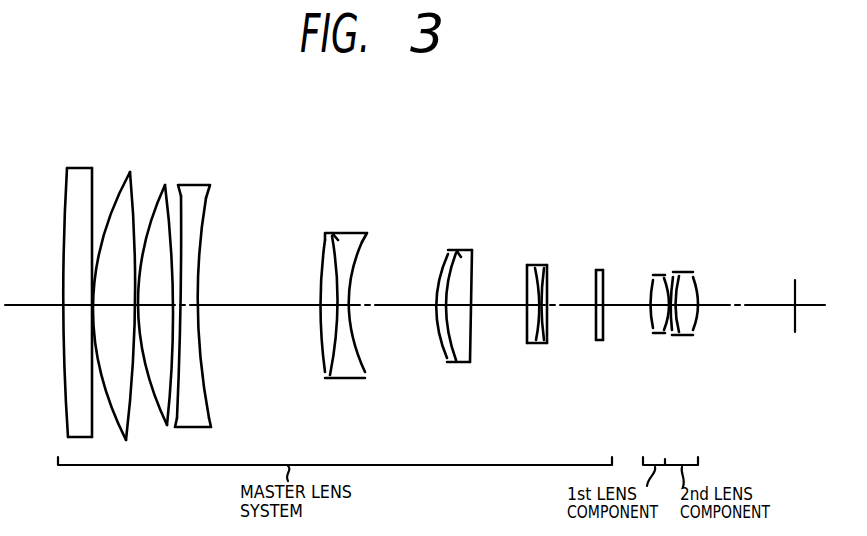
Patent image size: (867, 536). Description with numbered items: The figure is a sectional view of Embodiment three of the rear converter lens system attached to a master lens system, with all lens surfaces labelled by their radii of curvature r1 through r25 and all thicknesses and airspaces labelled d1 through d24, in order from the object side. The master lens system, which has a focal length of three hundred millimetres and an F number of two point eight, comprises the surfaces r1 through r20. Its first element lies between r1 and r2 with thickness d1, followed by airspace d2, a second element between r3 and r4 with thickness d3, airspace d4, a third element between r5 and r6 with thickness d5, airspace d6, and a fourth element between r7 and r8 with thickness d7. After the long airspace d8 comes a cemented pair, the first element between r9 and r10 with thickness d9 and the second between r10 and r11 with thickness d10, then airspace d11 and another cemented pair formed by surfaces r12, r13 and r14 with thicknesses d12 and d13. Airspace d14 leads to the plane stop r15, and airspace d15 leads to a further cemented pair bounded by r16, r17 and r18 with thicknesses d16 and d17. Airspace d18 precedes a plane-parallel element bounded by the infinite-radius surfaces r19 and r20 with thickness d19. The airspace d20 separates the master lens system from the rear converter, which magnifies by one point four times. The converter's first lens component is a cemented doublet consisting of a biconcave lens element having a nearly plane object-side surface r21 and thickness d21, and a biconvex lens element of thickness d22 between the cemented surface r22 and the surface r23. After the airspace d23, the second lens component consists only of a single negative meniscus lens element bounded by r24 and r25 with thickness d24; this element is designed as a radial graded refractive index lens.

The radius of curvature of first lens surface r1 is at (67, 190).
The radius of curvature of second lens surface r2 is at (92, 188).
The radius of curvature of third lens surface r3 is at (117, 190).
The radius of curvature of fourth lens surface r4 is at (131, 174).
The radius of curvature of fifth lens surface r5 is at (161, 188).
The radius of curvature of sixth lens surface r6 is at (167, 184).
The radius of curvature of seventh lens surface r7 is at (182, 197).
The radius of curvature of eighth lens surface r8 is at (204, 187).
The radius of curvature of ninth lens surface r9 is at (323, 240).
The radius of curvature of tenth lens surface r10 is at (338, 233).
The radius of curvature of eleventh lens surface r11 is at (360, 242).
The radius of curvature of twelfth lens surface r12 is at (437, 257).
The radius of curvature of thirteenth lens surface r13 is at (453, 250).
The radius of curvature of fourteenth lens surface r14 is at (471, 250).
The stop r15 is at (527, 265).
The radius of curvature of sixteenth lens surface r16 is at (502, 257).
The radius of curvature of seventeenth lens surface r17 is at (535, 265).
The radius of curvature of eighteenth lens surface r18 is at (555, 262).
The radius of curvature of nineteenth lens surface r19 is at (596, 270).
The radius of curvature of twentieth lens surface r20 is at (603, 272).
The radius of curvature of twenty-first lens surface r21 is at (653, 282).
The radius of curvature of twenty-second lens surface r22 is at (656, 276).
The radius of curvature of twenty-third lens surface r23 is at (671, 272).
The radius of curvature of twenty-fourth lens surface r24 is at (680, 275).
The radius of curvature of twenty-fifth lens surface r25 is at (695, 280).
The thickness of first lens element d1 is at (77, 308).
The airspace between first and second lens elements d2 is at (92, 308).
The thickness of second lens element d3 is at (113, 308).
The airspace between second and third lens elements d4 is at (130, 297).
The thickness of third lens element d5 is at (153, 308).
The airspace between third and fourth lens elements d6 is at (178, 310).
The thickness of fourth lens element d7 is at (193, 308).
The airspace between fourth and fifth lens elements d8 is at (248, 307).
The thickness of fifth lens element d9 is at (322, 308).
The thickness of sixth lens element d10 is at (339, 306).
The airspace between sixth and seventh lens elements d11 is at (371, 308).
The thickness of seventh lens element d12 is at (441, 309).
The thickness of eighth lens element d13 is at (463, 362).
The airspace between eighth lens element and stop d14 is at (476, 308).
The airspace between stop and ninth lens element d15 is at (524, 303).
The thickness of ninth lens element d16 is at (532, 307).
The thickness of tenth lens element d17 is at (540, 344).
The airspace between tenth and eleventh lens elements d18 is at (549, 308).
The thickness of eleventh lens element d19 is at (599, 308).
The airspace between master lens system and rear converter d20 is at (622, 308).
The thickness of biconcave lens element d21 is at (651, 312).
The thickness of biconvex lens element d22 is at (661, 310).
The airspace between first and second lens components d23 is at (675, 338).
The thickness of graded refractive index lens d24 is at (699, 310).